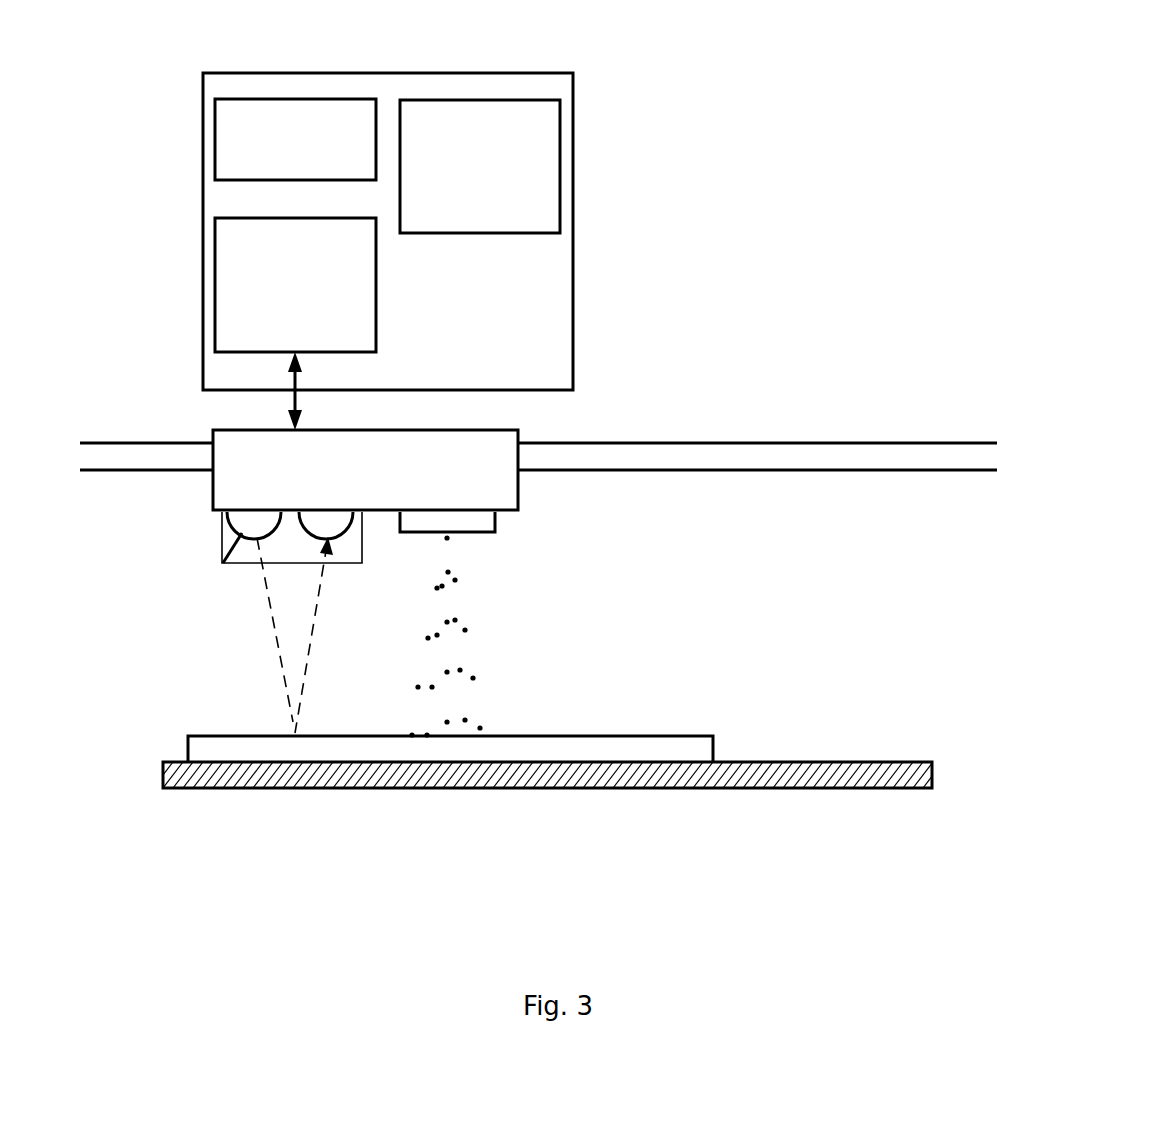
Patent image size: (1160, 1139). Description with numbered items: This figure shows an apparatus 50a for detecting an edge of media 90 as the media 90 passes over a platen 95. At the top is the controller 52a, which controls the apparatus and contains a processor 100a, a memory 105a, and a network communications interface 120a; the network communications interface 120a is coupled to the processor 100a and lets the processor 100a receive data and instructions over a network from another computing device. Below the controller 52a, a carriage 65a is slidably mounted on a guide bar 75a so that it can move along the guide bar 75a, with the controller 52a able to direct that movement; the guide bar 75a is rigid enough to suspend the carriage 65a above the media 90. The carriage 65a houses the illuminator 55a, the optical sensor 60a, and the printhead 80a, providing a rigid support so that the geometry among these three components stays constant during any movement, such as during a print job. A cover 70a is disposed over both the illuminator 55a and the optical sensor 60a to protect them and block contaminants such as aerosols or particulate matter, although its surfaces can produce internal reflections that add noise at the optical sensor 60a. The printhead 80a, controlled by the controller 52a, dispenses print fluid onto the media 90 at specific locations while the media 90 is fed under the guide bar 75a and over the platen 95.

The apparatus 50a is at (673, 198).
The controller 52a is at (471, 306).
The memory 105a is at (265, 171).
The network communications interface 120a is at (450, 212).
The processor 100a is at (265, 302).
The carriage 65a is at (243, 482).
The guide bar 75a is at (927, 457).
The illuminator 55a is at (225, 563).
The optical sensor 60a is at (338, 533).
The cover 70a is at (248, 563).
The printhead 80a is at (478, 523).
The media 90 is at (638, 749).
The platen 95 is at (723, 773).